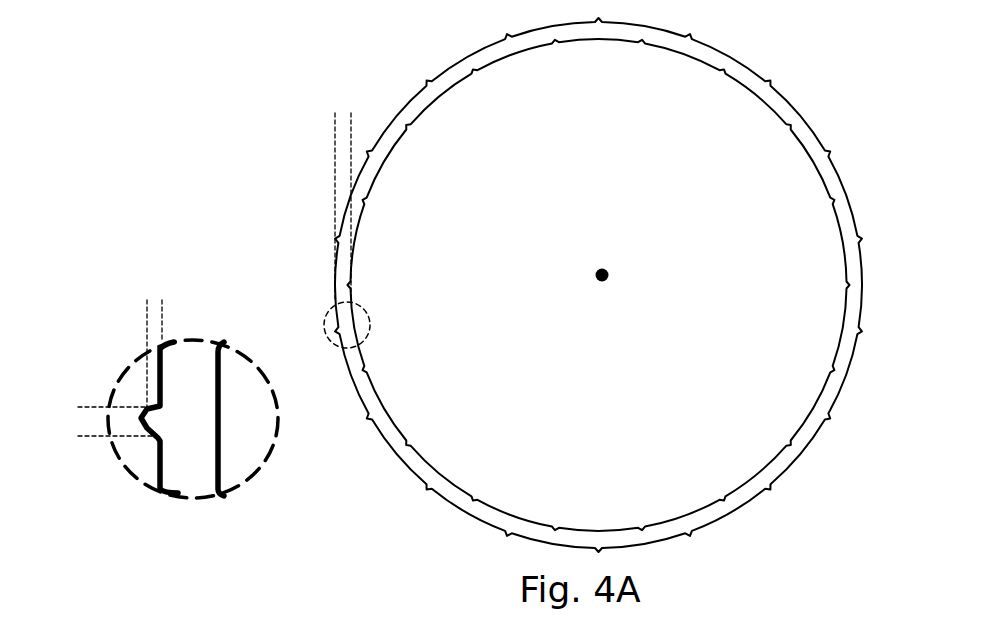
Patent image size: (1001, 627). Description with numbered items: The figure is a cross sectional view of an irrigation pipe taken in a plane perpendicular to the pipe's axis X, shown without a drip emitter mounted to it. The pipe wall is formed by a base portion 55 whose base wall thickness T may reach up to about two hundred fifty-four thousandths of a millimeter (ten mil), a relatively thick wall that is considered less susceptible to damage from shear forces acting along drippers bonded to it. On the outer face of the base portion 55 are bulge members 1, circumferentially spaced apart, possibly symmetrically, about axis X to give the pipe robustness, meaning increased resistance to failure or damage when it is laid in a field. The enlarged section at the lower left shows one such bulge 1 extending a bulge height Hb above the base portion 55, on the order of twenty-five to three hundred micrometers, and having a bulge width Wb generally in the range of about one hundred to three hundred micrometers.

The bulge member 1 is at (777, 79).
The base portion 55 is at (790, 452).
The axis X is at (600, 288).
The base wall thickness T is at (374, 122).
The bulge height Hb is at (186, 308).
The bulge width Wb is at (80, 380).